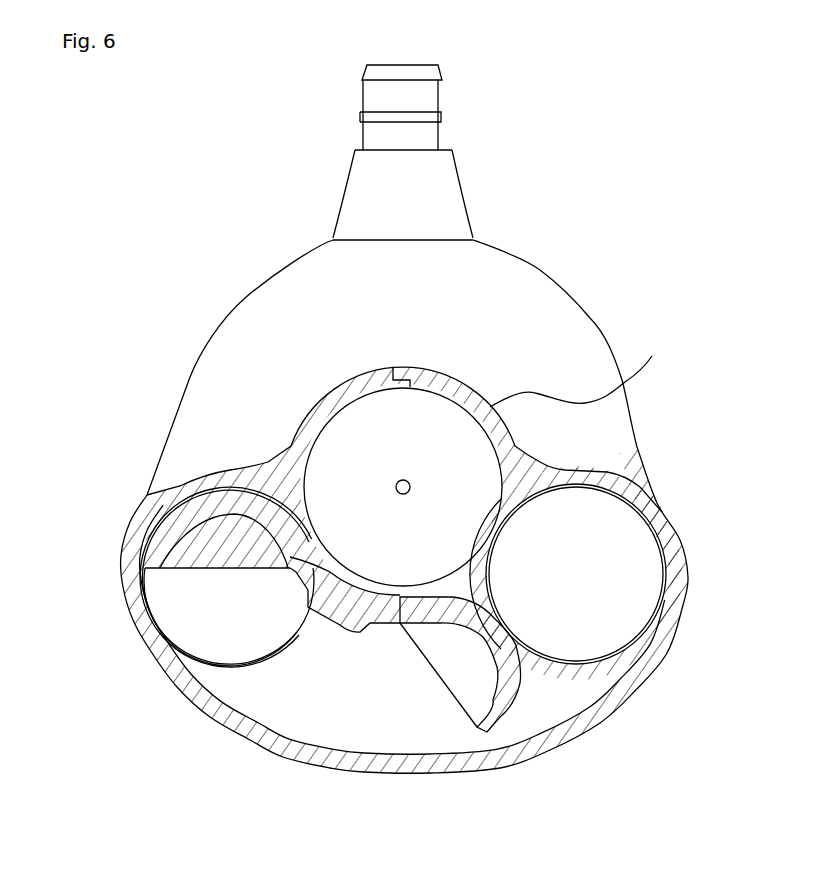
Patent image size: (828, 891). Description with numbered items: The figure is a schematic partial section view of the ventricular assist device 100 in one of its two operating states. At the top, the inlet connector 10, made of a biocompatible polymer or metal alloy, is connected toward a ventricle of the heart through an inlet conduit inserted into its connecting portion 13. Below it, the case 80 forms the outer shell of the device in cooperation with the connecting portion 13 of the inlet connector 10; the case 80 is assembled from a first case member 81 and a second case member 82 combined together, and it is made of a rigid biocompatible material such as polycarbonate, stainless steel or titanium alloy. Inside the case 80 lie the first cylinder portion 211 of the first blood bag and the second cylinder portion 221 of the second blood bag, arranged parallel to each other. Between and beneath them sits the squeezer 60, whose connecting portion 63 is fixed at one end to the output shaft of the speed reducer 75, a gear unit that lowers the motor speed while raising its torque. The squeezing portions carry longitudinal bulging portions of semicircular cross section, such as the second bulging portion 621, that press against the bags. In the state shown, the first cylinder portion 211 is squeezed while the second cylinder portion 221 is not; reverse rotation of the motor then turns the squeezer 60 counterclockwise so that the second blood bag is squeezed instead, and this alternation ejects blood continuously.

The ventricular assist device 100 is at (190, 194).
The connecting portion 13 is at (430, 97).
The inlet connector 10 is at (470, 182).
The case 80 is at (188, 362).
The speed reducer 75 is at (458, 447).
The first cylinder portion 211 is at (147, 573).
The second cylinder portion 221 is at (577, 663).
The connecting portion 63 is at (337, 605).
The squeezer 60 is at (457, 672).
The second bulging portion 621 is at (520, 673).
The first case member 81 is at (312, 753).
The second case member 82 is at (477, 757).